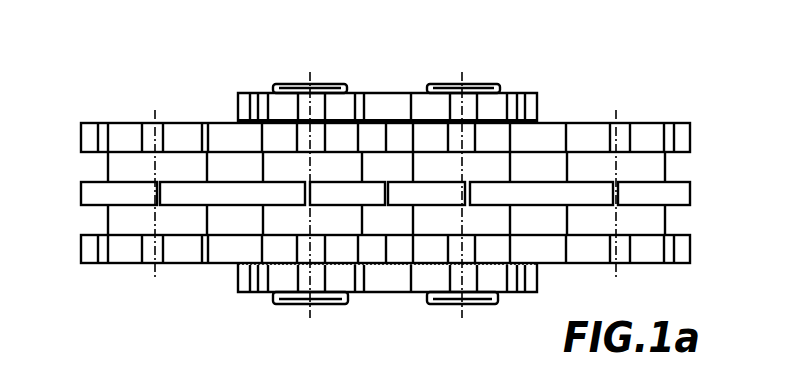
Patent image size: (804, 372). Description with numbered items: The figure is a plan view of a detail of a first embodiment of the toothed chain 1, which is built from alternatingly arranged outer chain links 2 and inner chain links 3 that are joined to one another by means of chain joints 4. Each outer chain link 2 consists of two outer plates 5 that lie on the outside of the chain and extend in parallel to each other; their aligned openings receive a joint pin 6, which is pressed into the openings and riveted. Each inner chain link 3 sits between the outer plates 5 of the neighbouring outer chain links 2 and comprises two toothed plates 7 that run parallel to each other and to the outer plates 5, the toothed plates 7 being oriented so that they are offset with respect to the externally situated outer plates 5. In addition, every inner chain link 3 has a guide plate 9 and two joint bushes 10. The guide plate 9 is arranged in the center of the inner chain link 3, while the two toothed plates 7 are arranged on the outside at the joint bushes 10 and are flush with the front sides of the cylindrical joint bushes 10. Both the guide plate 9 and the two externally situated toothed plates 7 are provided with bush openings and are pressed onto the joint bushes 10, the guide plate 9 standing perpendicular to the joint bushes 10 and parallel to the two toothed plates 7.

The toothed chain 1 is at (385, 167).
The outer chain link 2 is at (385, 163).
The inner chain link 3 is at (213, 118).
The chain joint 4 is at (326, 78).
The outer plate 5 is at (529, 103).
The joint pin 6 is at (288, 87).
The toothed plate 7 is at (92, 142).
The guide plate 9 is at (92, 198).
The joint bush 10 is at (117, 228).